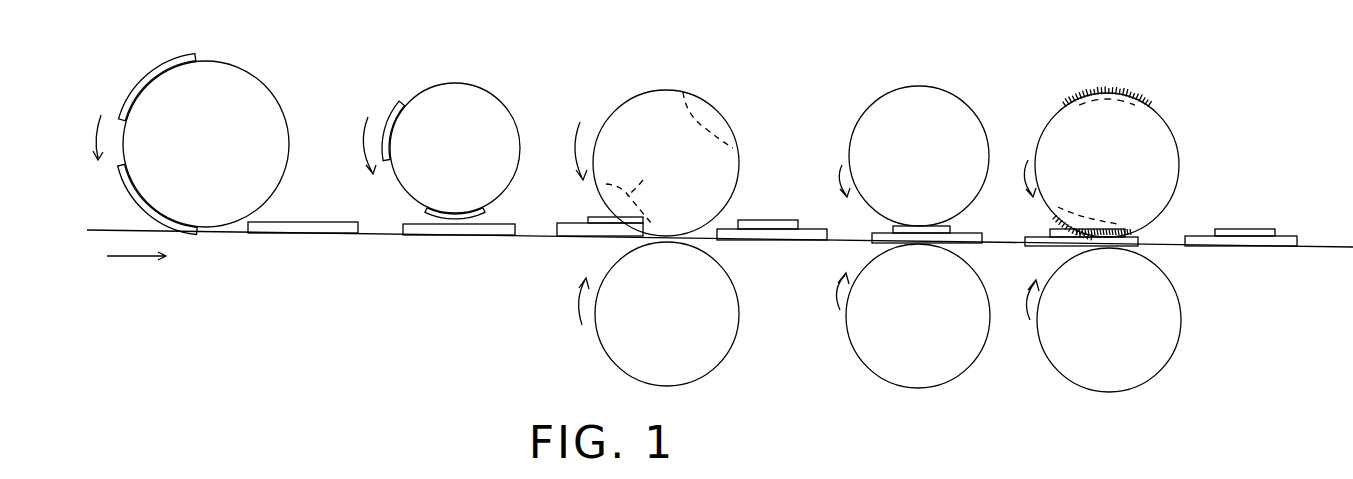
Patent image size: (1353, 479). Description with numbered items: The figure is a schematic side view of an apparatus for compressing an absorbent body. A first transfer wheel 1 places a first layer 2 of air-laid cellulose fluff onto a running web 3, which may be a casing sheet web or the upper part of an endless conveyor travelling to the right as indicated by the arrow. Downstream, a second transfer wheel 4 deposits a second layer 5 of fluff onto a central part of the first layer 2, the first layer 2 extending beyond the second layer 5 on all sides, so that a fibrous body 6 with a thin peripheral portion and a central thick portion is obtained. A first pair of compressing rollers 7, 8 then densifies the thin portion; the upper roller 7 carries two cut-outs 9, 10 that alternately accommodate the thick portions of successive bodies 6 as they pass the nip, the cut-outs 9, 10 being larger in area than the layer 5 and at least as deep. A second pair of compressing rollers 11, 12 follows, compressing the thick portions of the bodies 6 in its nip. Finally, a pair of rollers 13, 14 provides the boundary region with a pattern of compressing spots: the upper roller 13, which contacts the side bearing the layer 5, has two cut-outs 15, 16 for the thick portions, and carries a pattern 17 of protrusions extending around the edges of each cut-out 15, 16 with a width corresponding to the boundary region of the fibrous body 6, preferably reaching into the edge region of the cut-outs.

The first transfer wheel 1 is at (240, 95).
The first layer 2 is at (130, 200).
The running web 3 is at (163, 233).
The second transfer wheel 4 is at (448, 107).
The second layer 5 is at (395, 117).
The fibrous body 6 is at (598, 224).
The roller of first pair of compressing rollers 7 is at (630, 118).
The roller of first pair of compressing rollers 8 is at (700, 360).
The cut-out 9 is at (705, 100).
The cut-out 10 is at (638, 190).
The roller of second pair of compressing rollers 11 is at (880, 115).
The roller of second pair of compressing rollers 12 is at (922, 357).
The roller 13 is at (1068, 140).
The roller 14 is at (1133, 364).
The cut-out 15 is at (1116, 98).
The cut-out 16 is at (1090, 215).
The pattern of protrusions 17 is at (1090, 94).